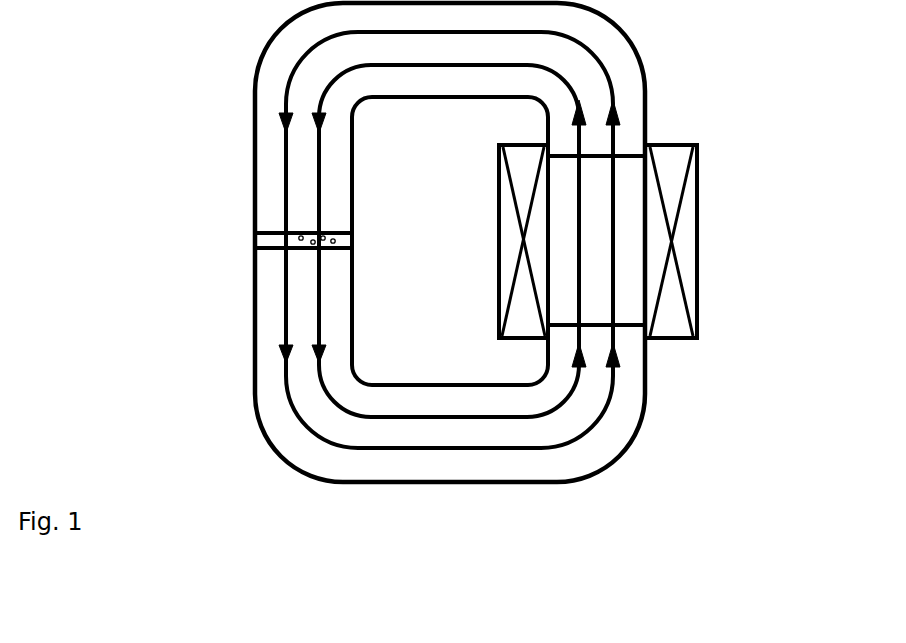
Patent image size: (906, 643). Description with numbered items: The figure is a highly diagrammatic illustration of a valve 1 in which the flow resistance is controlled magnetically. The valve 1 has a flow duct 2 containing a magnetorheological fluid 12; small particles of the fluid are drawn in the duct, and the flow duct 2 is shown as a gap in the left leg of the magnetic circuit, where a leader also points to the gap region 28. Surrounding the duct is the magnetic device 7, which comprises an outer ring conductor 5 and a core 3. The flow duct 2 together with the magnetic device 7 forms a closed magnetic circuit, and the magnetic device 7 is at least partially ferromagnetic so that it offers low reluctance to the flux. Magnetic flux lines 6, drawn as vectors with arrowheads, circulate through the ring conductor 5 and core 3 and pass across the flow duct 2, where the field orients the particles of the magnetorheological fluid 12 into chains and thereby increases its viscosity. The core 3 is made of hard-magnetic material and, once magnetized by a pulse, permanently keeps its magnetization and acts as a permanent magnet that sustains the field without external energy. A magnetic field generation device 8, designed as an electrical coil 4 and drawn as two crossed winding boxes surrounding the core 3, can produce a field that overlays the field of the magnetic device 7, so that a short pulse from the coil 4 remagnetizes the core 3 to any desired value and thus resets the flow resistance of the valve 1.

The valve 1 is at (146, 82).
The flow duct 2 is at (262, 241).
The core 3 is at (620, 170).
The electrical coil 4 is at (680, 230).
The ring conductor 5 is at (625, 65).
The magnetic flux lines 6 is at (618, 383).
The magnetic device 7 is at (283, 57).
The magnetic field generation device 8 is at (688, 268).
The magnetorheological fluid 12 is at (335, 241).
The gap region 28 is at (295, 243).